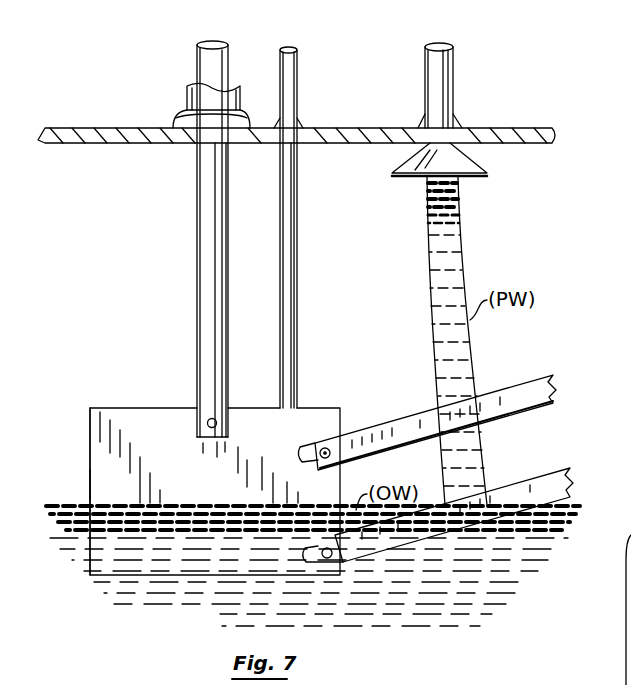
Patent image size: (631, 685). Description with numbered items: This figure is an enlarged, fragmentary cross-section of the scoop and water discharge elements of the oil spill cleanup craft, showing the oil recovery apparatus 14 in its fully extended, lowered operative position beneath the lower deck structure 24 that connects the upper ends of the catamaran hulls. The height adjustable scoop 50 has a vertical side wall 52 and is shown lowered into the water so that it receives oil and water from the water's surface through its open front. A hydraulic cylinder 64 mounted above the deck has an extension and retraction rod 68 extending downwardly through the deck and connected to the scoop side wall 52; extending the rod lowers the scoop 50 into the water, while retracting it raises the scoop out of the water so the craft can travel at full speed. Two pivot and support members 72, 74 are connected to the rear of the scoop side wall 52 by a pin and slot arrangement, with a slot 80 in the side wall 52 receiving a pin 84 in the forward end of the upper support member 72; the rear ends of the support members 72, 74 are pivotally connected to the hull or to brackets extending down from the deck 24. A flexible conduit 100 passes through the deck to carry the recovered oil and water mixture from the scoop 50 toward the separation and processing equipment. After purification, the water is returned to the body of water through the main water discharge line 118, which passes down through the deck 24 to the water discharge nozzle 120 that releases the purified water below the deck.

The oil recovery apparatus 14 is at (110, 398).
The lower deck structure 24 is at (540, 128).
The height adjustable scoop 50 is at (90, 437).
The vertical side wall 52 is at (100, 478).
The hydraulic cylinder 64 is at (232, 95).
The extension and retraction rod 68 is at (203, 74).
The pivot and support member 72 is at (500, 382).
The pivot and support member 74 is at (536, 480).
The slot 80 is at (300, 447).
The pin 84 is at (339, 448).
The flexible conduit 100 is at (300, 68).
The main water discharge line 118 is at (453, 72).
The water discharge nozzle 120 is at (487, 170).